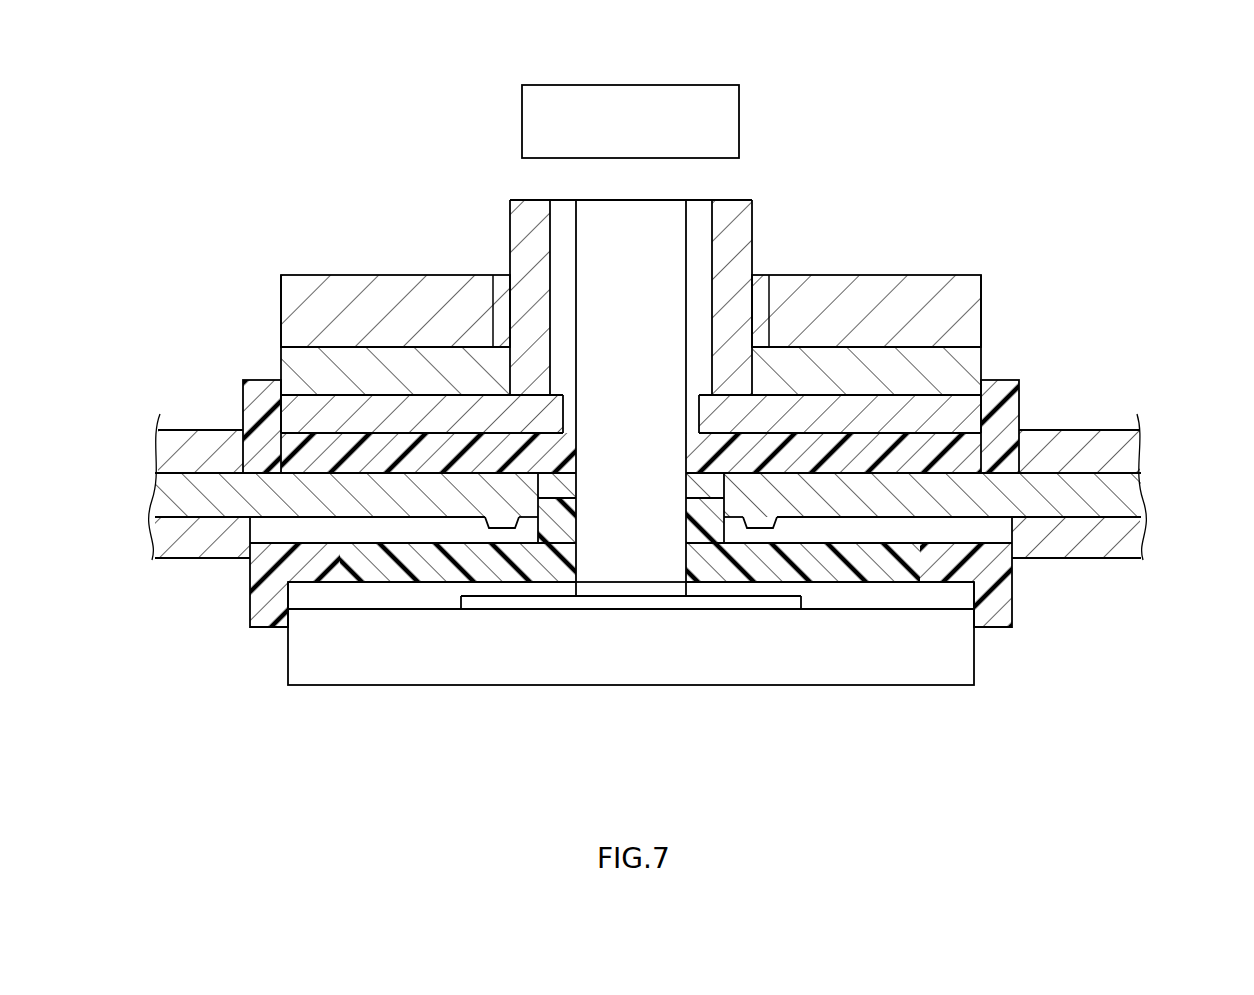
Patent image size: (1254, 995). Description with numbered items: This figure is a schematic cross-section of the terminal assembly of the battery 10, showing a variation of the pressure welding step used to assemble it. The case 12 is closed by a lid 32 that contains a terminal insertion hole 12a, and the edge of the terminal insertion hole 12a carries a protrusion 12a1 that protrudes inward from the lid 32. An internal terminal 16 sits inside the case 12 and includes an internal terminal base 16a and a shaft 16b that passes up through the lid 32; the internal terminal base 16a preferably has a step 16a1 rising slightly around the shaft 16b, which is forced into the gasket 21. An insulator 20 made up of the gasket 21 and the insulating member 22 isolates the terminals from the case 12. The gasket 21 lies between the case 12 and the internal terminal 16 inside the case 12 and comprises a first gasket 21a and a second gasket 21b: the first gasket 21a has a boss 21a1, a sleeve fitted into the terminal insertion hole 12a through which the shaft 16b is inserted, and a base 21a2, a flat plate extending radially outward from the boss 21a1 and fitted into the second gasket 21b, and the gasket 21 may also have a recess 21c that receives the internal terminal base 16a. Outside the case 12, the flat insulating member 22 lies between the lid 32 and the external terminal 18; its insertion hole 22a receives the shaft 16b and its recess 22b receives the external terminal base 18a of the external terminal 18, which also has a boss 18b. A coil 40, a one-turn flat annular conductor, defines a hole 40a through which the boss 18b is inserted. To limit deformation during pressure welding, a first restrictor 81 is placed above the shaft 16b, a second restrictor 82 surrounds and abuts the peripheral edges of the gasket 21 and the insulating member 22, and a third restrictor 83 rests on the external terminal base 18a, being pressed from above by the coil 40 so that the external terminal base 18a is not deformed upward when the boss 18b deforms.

The battery 10 is at (262, 105).
The case 12 is at (689, 575).
The terminal insertion hole 12a is at (553, 490).
The protrusion 12a1 is at (505, 528).
The internal terminal 16 is at (756, 456).
The internal terminal base 16a is at (900, 602).
The step 16a1 is at (722, 590).
The shaft 16b is at (575, 218).
The external terminal 18 is at (668, 284).
The external terminal base 18a is at (943, 397).
The boss 18b is at (752, 222).
The insulator 20 is at (623, 624).
The gasket 21 is at (680, 618).
The first gasket 21a is at (832, 583).
The boss 21a1 is at (735, 535).
The base 21a2 is at (883, 540).
The second gasket 21b is at (1010, 610).
The recess 21c is at (300, 627).
The insulating member 22 is at (651, 502).
The insertion hole 22a is at (588, 466).
The recess 22b is at (293, 408).
The lid 32 is at (1117, 470).
The coil 40 is at (631, 275).
The hole 40a is at (500, 290).
The first restrictor 81 is at (739, 119).
The second restrictor 82 is at (180, 432).
The third restrictor 83 is at (317, 347).